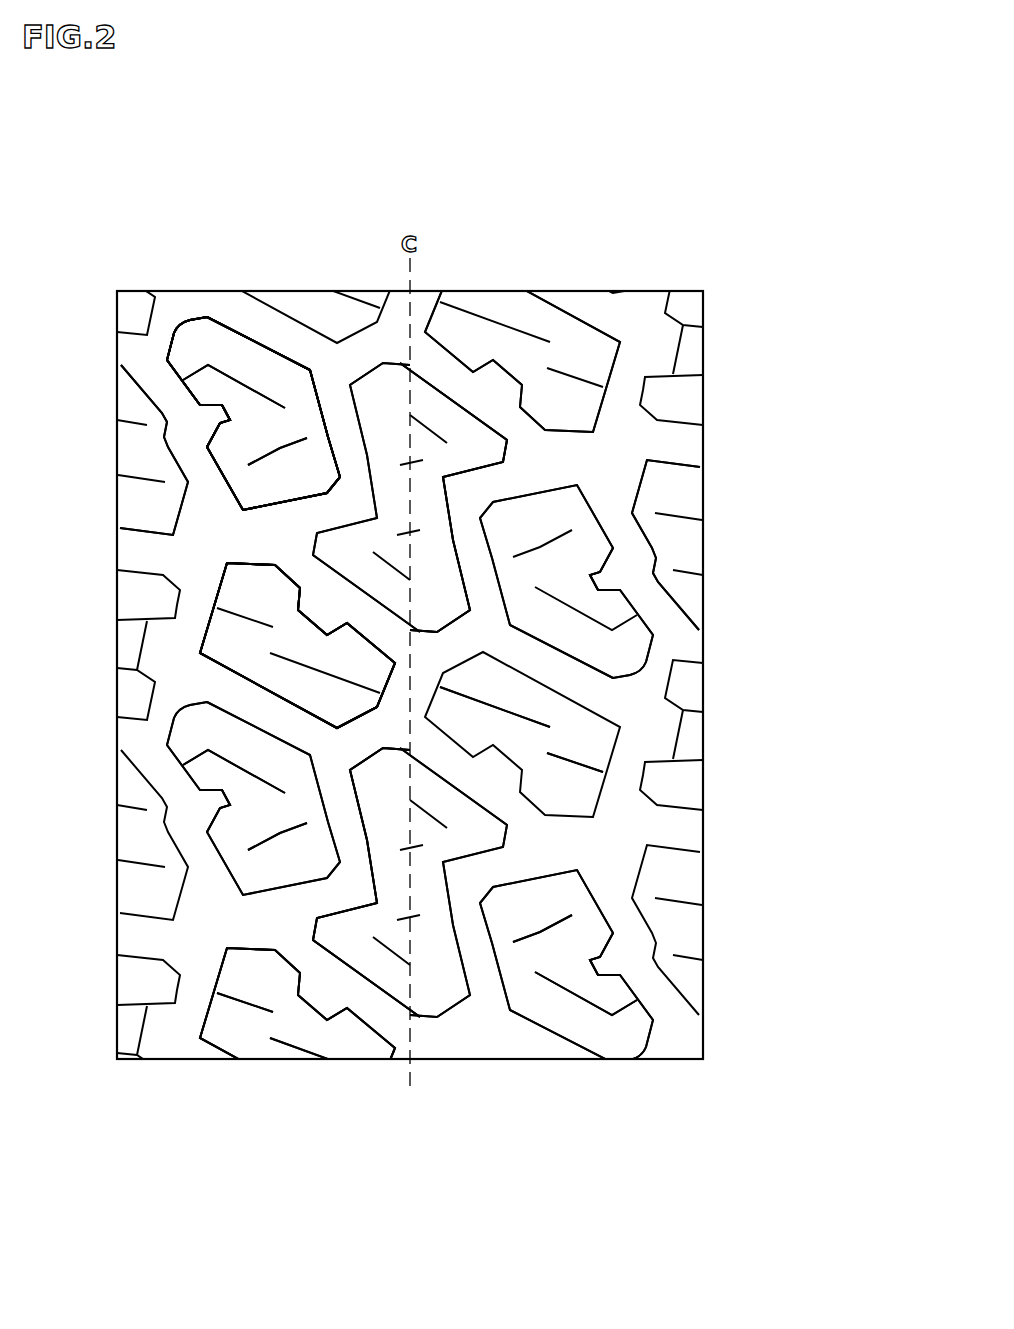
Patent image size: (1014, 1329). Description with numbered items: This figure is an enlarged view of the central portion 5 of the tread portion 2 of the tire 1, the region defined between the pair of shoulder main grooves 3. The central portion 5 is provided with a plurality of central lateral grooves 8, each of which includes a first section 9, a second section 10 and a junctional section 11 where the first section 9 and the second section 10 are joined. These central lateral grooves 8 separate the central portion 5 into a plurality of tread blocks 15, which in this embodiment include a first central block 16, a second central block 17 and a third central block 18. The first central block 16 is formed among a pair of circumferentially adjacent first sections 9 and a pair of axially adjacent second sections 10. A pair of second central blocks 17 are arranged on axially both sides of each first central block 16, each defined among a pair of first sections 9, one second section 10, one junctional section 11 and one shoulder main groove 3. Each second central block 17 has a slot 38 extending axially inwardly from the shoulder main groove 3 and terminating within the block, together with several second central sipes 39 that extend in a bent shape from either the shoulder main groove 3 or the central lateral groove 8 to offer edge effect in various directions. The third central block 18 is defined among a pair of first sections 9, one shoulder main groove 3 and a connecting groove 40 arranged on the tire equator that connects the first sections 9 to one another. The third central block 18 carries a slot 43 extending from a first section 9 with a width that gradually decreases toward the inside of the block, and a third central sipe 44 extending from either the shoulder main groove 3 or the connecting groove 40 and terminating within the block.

The tire 1 is at (410, 556).
The tread portion 2 is at (302, 259).
The shoulder main groove 3 is at (155, 341).
The central portion 5 is at (458, 319).
The central lateral groove 8 is at (55, 482).
The first section 9 is at (319, 591).
The second section 10 is at (339, 463).
The junctional section 11 is at (253, 534).
The tread block 15 is at (487, 1137).
The first central block 16 is at (447, 558).
The second central block 17 is at (255, 436).
The third central block 18 is at (261, 683).
The slot 38 is at (200, 424).
The second central sipe 39 is at (240, 383).
The connecting groove 40 is at (430, 685).
The slot 43 is at (345, 624).
The third central sipe 44 is at (503, 706).